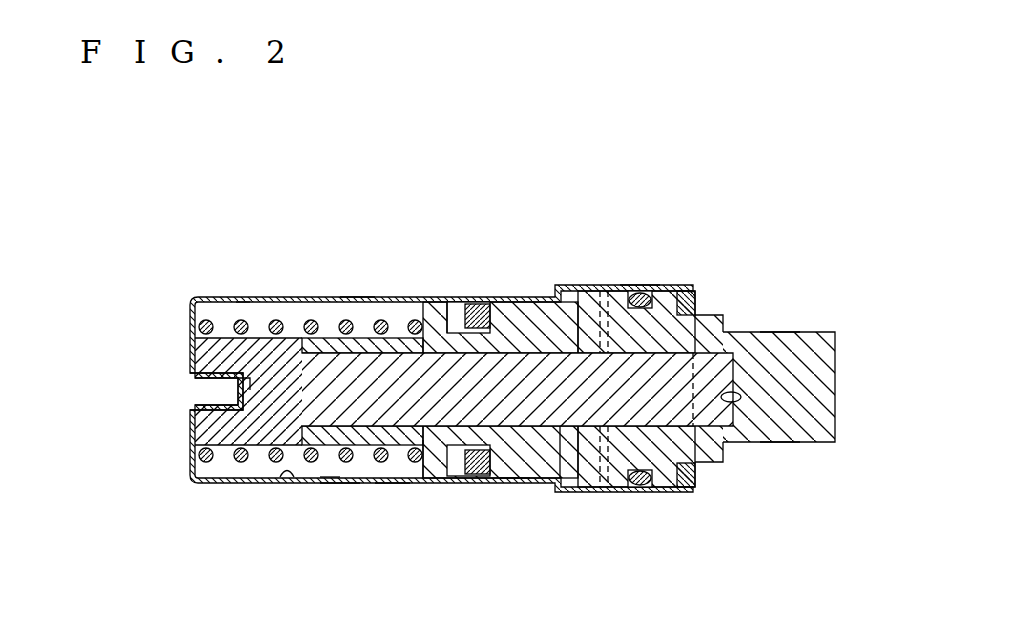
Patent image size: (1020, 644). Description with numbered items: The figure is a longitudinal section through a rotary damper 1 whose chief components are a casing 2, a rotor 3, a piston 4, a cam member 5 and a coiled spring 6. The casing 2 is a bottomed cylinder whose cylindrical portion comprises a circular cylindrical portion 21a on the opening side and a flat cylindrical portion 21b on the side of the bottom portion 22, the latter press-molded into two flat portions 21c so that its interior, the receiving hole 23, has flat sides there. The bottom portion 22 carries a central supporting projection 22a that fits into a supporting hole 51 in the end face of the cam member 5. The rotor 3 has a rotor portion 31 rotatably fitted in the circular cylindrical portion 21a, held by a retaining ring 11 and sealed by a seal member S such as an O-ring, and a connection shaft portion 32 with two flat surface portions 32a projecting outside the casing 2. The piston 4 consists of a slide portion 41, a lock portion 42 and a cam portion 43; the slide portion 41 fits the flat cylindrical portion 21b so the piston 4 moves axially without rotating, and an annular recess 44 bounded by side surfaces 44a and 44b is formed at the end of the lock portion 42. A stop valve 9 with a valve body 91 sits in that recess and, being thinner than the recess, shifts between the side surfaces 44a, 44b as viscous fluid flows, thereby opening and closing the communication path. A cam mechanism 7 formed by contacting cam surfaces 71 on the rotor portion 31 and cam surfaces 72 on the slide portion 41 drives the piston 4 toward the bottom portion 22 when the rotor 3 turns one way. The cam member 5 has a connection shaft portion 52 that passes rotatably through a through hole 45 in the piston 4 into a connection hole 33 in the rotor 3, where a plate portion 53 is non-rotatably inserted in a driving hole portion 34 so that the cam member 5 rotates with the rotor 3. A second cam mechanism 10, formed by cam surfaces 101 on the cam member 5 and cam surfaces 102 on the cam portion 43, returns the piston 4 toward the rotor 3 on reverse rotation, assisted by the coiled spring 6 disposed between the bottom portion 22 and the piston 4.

The rotary damper 1 is at (526, 186).
The casing 2 is at (391, 296).
The rotor 3 is at (597, 384).
The piston 4 is at (484, 404).
The cam member 5 is at (219, 327).
The coiled spring 6 is at (242, 300).
The cam mechanism 7 is at (657, 343).
The stop valve 9 is at (467, 249).
The second cam mechanism 10 is at (327, 280).
The retaining ring 11 is at (693, 473).
The circular cylindrical portion 21a is at (633, 285).
The flat cylindrical portion 21b is at (340, 486).
The flat portion 21c is at (356, 298).
The bottom portion 22 is at (190, 445).
The supporting projection 22a is at (250, 376).
The receiving hole 23 is at (287, 478).
The rotor portion 31 is at (632, 427).
The connection shaft portion 32 is at (836, 350).
The flat surface portion 32a is at (803, 332).
The connection hole 33 is at (683, 468).
The driving hole portion 34 is at (741, 397).
The slide portion 41 is at (515, 460).
The lock portion 42 is at (432, 466).
The cam portion 43 is at (327, 477).
The annular recess 44 is at (473, 409).
The side surface 44a is at (480, 303).
The side surface 44b is at (453, 484).
The through hole 45 is at (541, 427).
The supporting hole 51 is at (212, 402).
The connection shaft portion 52 is at (570, 440).
The plate portion 53 is at (684, 396).
The cam surface 71 is at (578, 285).
The cam surface 72 is at (599, 285).
The valve body 91 is at (442, 274).
The cam surface 101 is at (325, 337).
The cam surface 102 is at (290, 328).
The seal member S is at (638, 488).